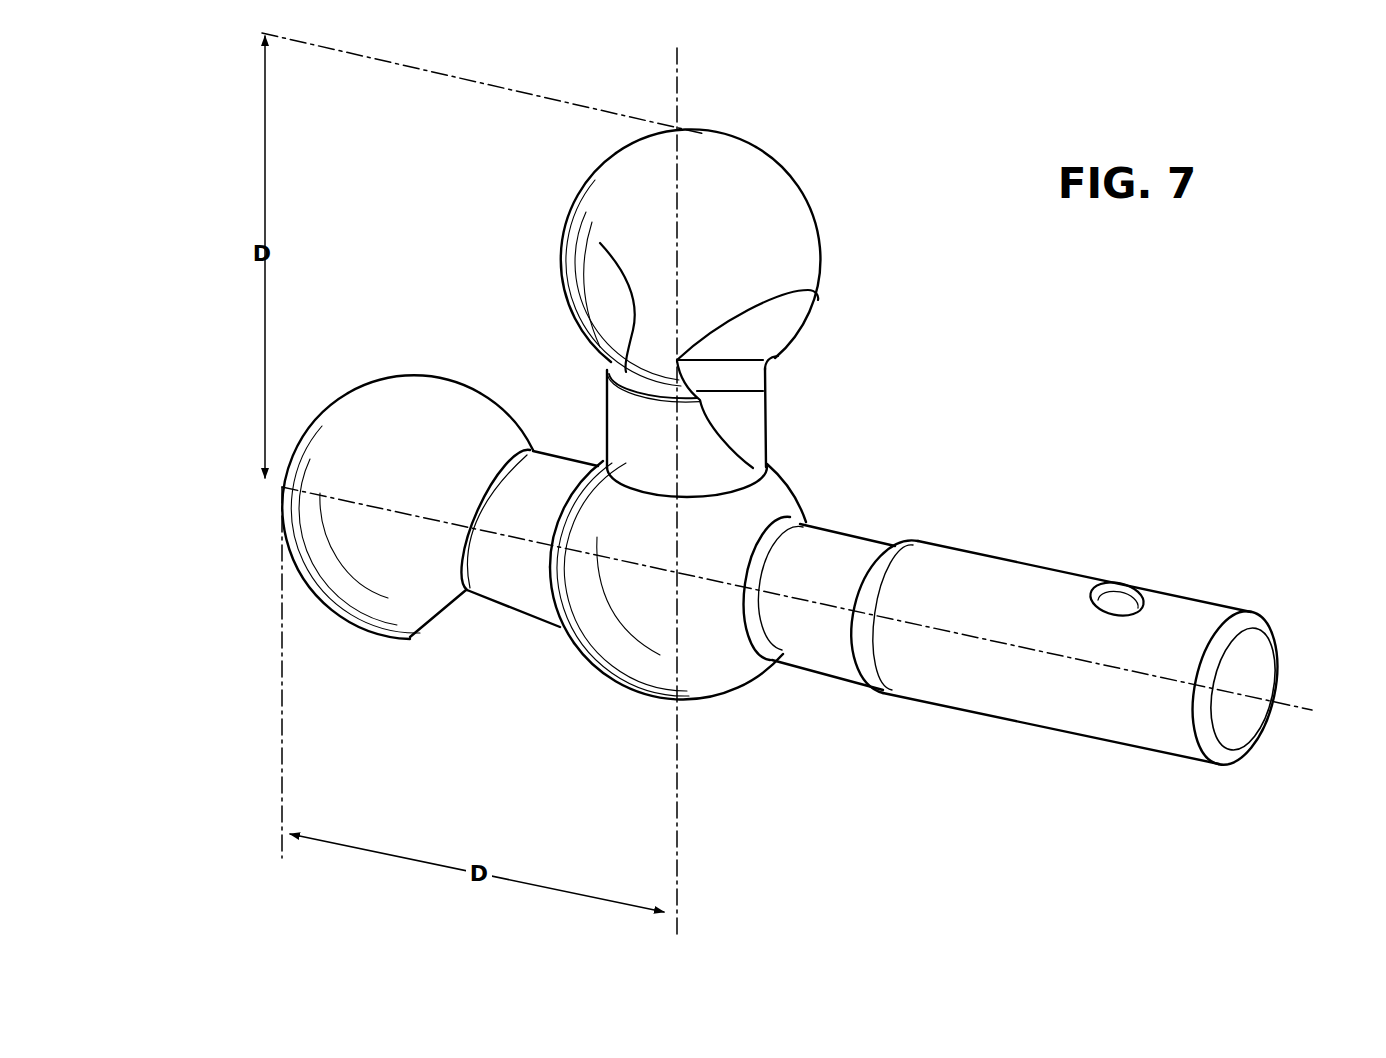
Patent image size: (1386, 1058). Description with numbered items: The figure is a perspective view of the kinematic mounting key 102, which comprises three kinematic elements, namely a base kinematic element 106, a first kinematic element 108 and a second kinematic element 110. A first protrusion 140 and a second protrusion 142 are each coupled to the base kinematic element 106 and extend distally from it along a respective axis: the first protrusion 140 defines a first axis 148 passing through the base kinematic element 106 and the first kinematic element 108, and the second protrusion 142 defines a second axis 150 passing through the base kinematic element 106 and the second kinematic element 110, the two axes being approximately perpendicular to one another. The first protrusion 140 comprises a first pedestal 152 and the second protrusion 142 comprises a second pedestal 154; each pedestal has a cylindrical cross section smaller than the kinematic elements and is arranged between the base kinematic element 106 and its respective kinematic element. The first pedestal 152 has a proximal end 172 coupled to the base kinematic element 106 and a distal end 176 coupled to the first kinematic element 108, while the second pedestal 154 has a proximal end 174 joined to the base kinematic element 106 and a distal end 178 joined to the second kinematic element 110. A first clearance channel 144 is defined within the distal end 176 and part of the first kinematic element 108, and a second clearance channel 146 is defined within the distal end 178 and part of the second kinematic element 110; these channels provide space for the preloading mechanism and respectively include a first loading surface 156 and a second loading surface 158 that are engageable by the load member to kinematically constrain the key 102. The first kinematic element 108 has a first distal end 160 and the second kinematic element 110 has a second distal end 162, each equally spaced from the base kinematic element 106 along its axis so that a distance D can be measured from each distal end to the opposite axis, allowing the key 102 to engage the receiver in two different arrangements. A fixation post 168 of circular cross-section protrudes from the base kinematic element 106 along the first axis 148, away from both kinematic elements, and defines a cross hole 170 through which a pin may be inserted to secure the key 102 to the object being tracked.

The key 102 is at (868, 92).
The base kinematic element 106 is at (623, 602).
The first kinematic element 108 is at (382, 473).
The second kinematic element 110 is at (700, 250).
The first protrusion 140 is at (357, 366).
The second protrusion 142 is at (830, 213).
The first clearance channel 144 is at (499, 640).
The second clearance channel 146 is at (776, 373).
The first axis 148 is at (1296, 691).
The second axis 150 is at (677, 810).
The first pedestal 152 is at (560, 450).
The second pedestal 154 is at (598, 392).
The first loading surface 156 is at (448, 620).
The second loading surface 158 is at (786, 318).
The first distal end 160 is at (278, 487).
The second distal end 162 is at (720, 128).
The fixation post 168 is at (956, 545).
The cross hole 170 is at (1128, 603).
The proximal end 172 is at (560, 633).
The proximal end 174 is at (770, 482).
The distal end 176 is at (486, 449).
The distal end 178 is at (623, 368).